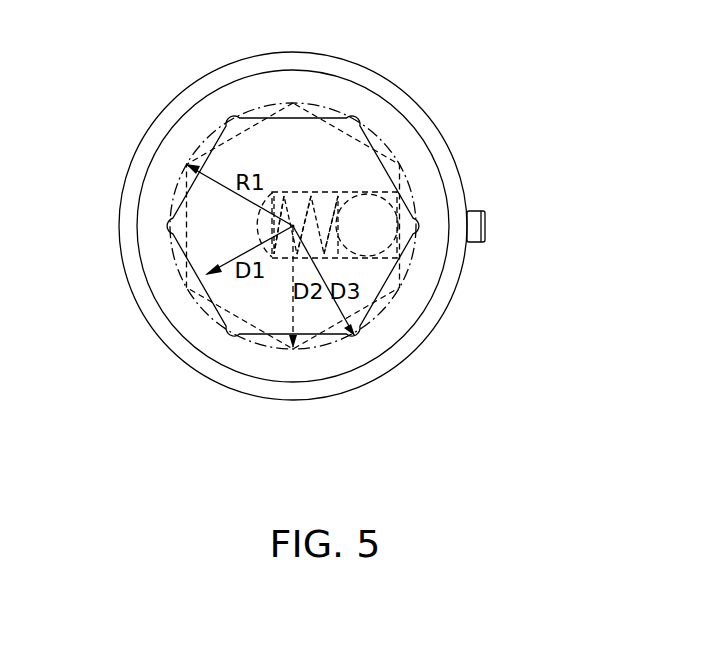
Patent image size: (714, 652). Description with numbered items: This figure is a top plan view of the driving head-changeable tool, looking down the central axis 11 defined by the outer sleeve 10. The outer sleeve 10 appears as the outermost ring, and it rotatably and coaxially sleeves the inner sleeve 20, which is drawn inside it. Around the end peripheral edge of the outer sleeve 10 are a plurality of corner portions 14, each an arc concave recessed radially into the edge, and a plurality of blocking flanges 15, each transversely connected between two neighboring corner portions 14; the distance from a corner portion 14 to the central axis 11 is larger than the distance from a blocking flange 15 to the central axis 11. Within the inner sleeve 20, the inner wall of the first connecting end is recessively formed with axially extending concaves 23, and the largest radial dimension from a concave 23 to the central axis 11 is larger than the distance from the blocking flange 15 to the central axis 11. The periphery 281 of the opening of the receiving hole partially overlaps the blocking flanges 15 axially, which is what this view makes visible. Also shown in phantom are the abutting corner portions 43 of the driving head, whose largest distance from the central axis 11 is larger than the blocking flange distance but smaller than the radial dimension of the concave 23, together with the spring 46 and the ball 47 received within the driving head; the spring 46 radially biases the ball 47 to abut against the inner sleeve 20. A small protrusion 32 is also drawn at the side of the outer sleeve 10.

The outer sleeve 10 is at (427, 122).
The central axis 11 is at (293, 225).
The corner portion 14 is at (229, 327).
The blocking flange 15 is at (200, 275).
The inner sleeve 20 is at (412, 302).
The concave 23 is at (195, 275).
The protrusion 32 is at (477, 227).
The abutting corner portion 43 is at (318, 350).
The spring 46 is at (293, 225).
The ball 47 is at (377, 212).
The periphery of the opening 281 is at (185, 292).